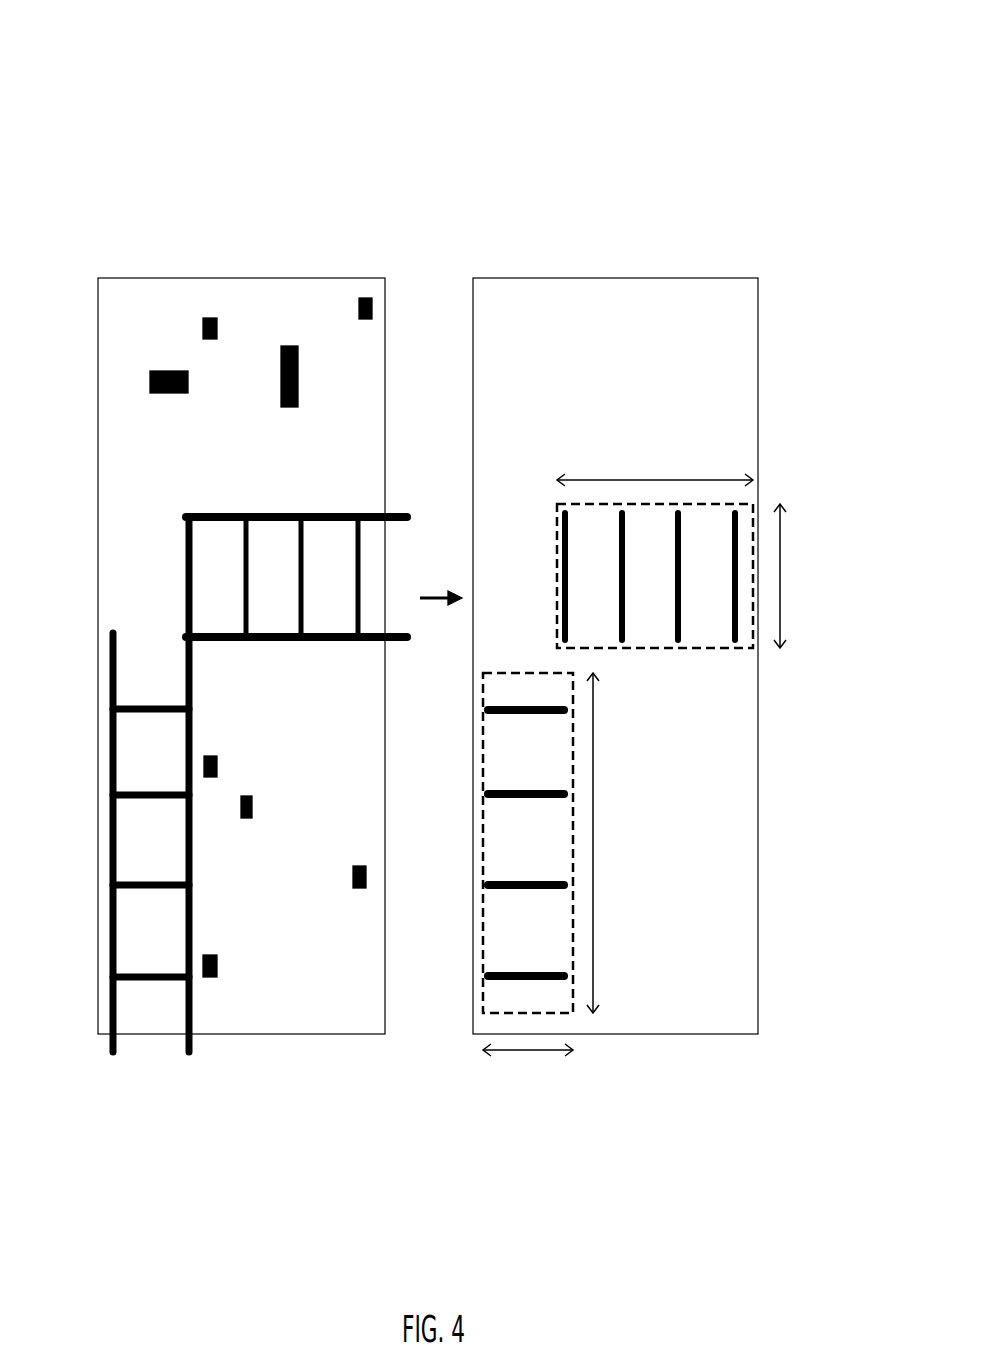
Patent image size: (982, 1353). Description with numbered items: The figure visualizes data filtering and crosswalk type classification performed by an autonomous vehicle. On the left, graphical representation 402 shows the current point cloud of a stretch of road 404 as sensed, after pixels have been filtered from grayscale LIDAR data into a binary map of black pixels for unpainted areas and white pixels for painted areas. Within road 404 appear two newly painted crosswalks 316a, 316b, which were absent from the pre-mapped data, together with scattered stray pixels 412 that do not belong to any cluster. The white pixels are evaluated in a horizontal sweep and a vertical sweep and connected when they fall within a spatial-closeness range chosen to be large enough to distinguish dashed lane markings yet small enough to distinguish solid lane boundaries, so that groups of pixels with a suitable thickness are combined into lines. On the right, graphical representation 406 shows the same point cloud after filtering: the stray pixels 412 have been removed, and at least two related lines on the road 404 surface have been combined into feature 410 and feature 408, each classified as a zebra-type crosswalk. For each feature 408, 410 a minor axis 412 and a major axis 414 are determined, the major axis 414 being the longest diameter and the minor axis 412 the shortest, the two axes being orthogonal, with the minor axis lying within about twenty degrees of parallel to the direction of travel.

The graphical representation 402 is at (213, 118).
The graphical representation 406 is at (583, 118).
The road 404 is at (90, 462).
The crosswalk 316a is at (313, 495).
The crosswalk 316b is at (105, 757).
The minor axis 412 is at (482, 694).
The major axis 414 is at (655, 730).
The feature 410 is at (690, 495).
The feature 408 is at (480, 757).